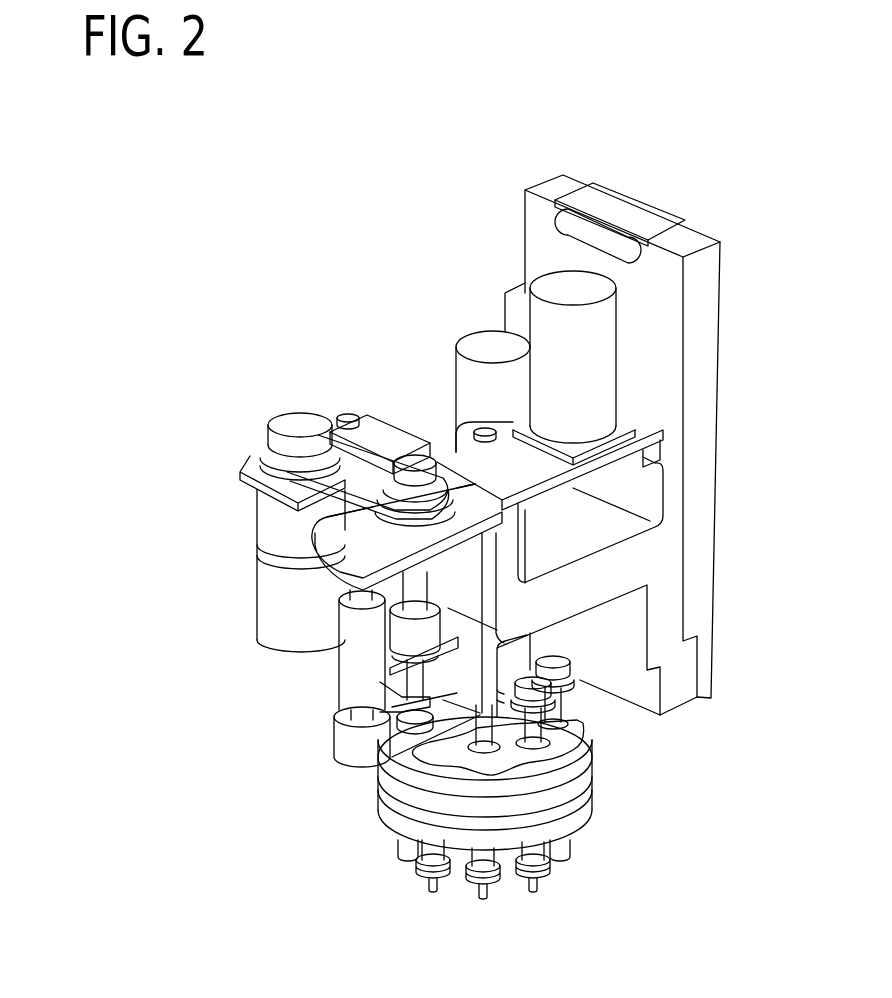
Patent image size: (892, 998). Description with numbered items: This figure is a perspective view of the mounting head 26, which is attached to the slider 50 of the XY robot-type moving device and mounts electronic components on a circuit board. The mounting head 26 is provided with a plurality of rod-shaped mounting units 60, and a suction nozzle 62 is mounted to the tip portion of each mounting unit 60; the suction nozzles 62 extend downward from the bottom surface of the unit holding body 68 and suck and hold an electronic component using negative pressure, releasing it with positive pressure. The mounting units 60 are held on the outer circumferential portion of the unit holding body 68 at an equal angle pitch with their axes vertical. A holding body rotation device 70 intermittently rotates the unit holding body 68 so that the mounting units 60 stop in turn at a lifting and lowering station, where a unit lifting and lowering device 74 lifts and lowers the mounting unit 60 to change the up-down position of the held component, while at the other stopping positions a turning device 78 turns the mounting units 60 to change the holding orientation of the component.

The mounting head 26 is at (578, 120).
The slider 50 is at (713, 300).
The turning device 78 is at (438, 317).
The holding body rotation device 70 is at (198, 483).
The unit lifting and lowering device 74 is at (287, 699).
The unit holding body 68 is at (387, 803).
The mounting unit 60 is at (582, 690).
The suction nozzle 62 is at (388, 853).